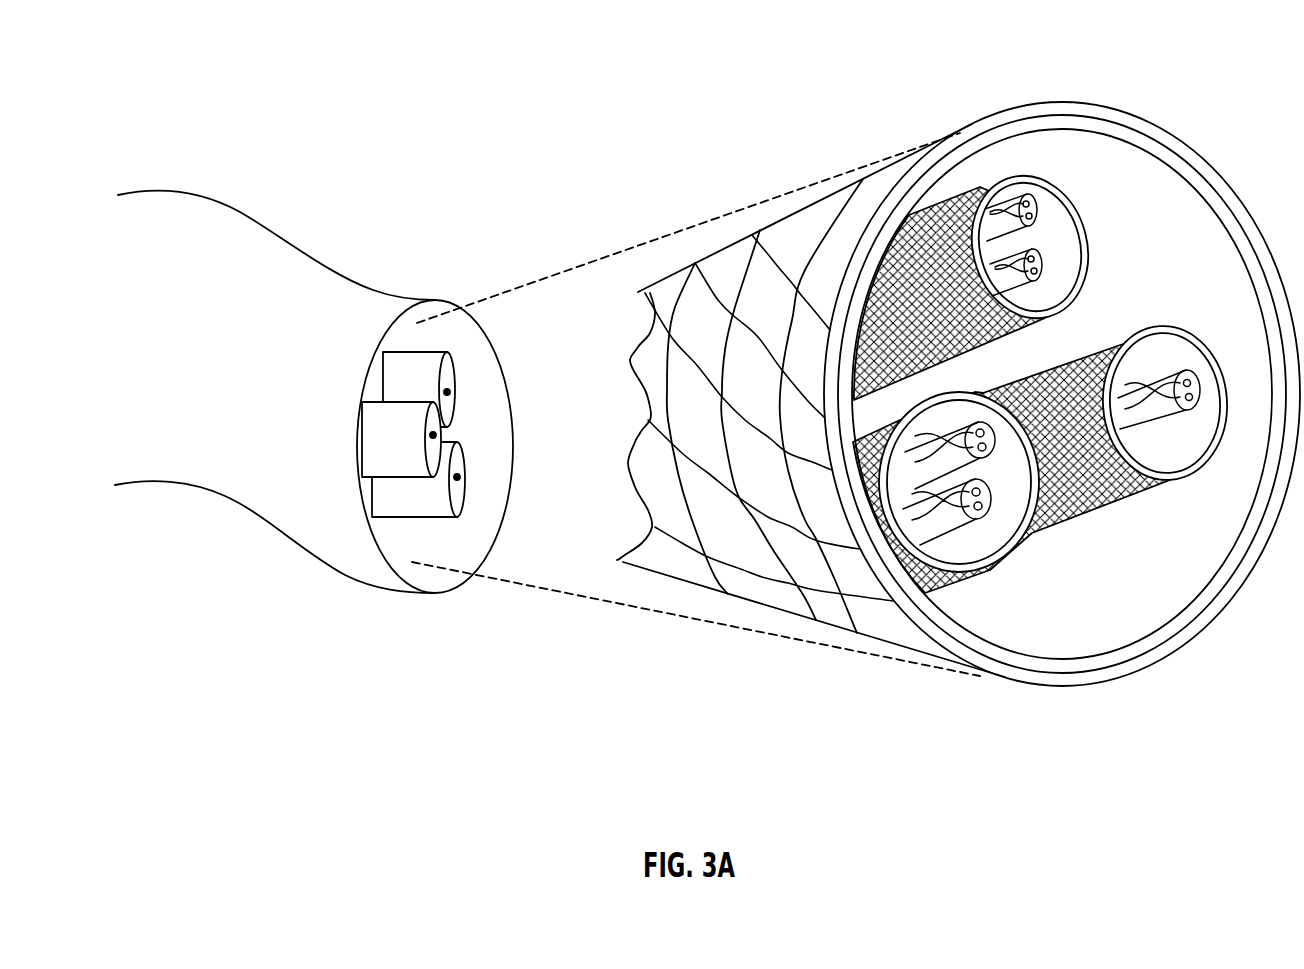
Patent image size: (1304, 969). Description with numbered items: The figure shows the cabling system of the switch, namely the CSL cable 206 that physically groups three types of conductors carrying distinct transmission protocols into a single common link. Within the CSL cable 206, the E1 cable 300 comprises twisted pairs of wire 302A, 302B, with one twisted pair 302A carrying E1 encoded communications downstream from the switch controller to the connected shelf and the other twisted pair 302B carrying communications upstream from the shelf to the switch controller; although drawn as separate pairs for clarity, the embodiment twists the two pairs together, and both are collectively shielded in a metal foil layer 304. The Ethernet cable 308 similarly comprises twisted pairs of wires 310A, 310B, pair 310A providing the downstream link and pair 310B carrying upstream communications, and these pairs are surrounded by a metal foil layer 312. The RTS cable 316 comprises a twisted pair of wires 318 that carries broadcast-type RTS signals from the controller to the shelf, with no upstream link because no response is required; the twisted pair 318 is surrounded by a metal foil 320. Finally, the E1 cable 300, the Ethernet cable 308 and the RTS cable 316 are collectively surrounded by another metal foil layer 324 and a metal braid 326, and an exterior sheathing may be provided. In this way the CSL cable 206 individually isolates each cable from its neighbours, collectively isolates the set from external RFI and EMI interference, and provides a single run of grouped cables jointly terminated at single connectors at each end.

The CSL cable 206 is at (190, 472).
The E1 cable 300 is at (955, 193).
The twisted pair of wire 302A is at (1036, 192).
The twisted pair of wire 302B is at (1048, 264).
The metal foil layer 304 is at (992, 324).
The Ethernet cable 308 is at (922, 573).
The twisted pair of wires 310A is at (994, 441).
The twisted pair of wires 310B is at (990, 497).
The metal foil layer 312 is at (882, 428).
The RTS cable 316 is at (1120, 485).
The twisted pair of wires 318 is at (1174, 332).
The metal foil 320 is at (1160, 482).
The metal foil layer 324 is at (1128, 138).
The metal braid 326 is at (1222, 186).